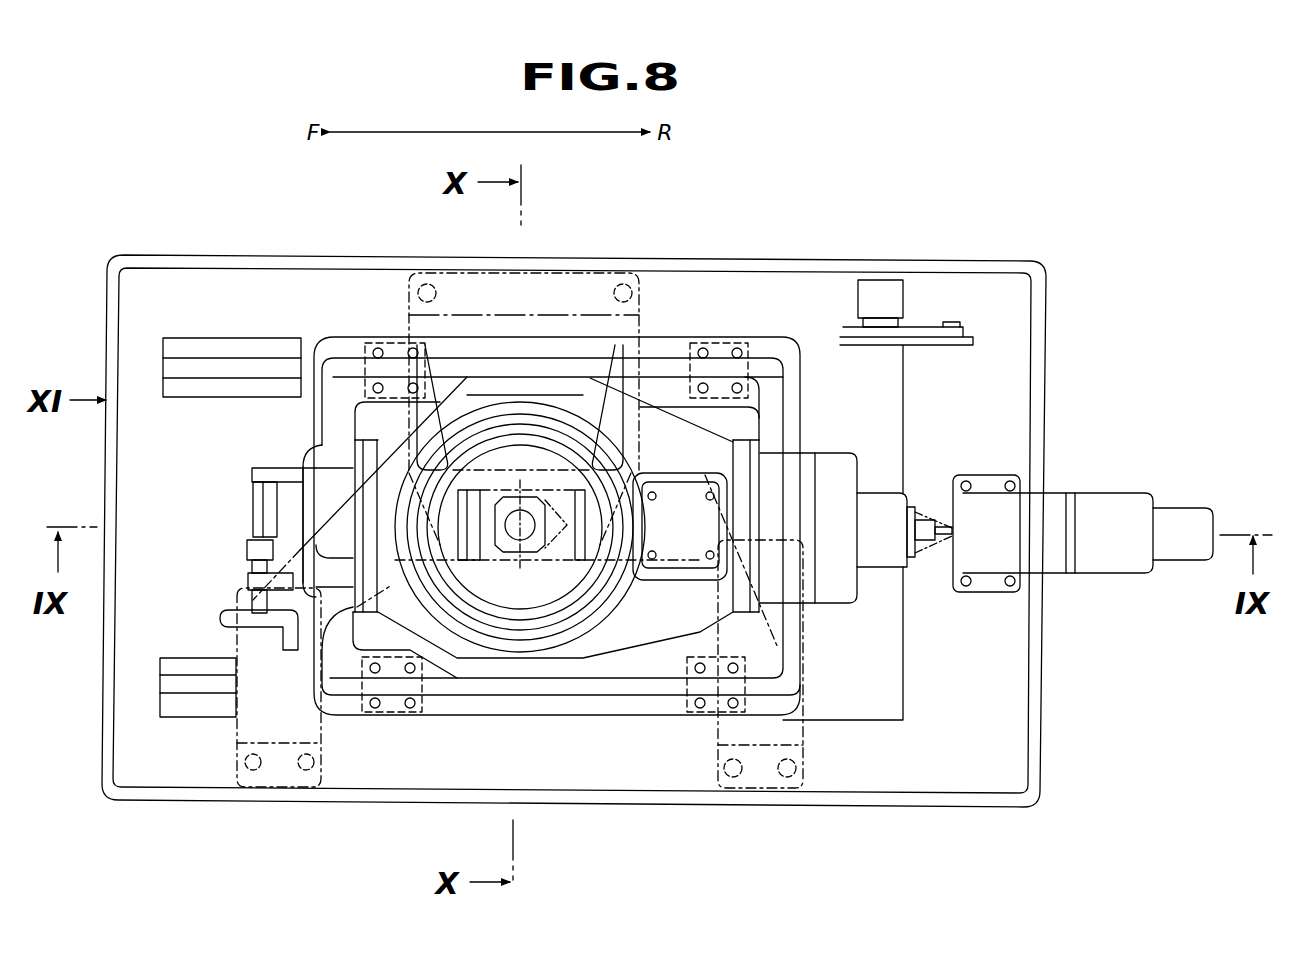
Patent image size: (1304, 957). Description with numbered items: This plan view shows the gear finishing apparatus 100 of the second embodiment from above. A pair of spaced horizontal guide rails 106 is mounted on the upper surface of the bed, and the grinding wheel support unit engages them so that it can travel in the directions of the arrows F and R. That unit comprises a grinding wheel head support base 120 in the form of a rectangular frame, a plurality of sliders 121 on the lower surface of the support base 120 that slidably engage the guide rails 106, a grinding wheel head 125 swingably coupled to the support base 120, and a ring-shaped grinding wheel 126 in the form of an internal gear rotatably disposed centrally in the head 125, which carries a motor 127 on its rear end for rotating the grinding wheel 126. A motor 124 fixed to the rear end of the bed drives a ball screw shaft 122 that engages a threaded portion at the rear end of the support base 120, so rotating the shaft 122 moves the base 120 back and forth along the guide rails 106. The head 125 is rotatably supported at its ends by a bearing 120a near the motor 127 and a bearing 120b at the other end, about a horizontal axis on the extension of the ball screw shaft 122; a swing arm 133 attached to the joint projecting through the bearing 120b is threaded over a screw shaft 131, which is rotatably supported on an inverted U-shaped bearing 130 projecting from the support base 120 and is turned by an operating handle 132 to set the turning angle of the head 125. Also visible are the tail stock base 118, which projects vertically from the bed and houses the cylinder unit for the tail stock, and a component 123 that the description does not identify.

The gear finishing apparatus 100 is at (978, 245).
The guide rails 106 is at (246, 370).
The tail stock base 118 is at (808, 683).
The grinding wheel head support base 120 is at (790, 407).
The bearing 120a is at (792, 577).
The bearing 120b is at (330, 488).
The sliders 121 is at (388, 340).
The ball screw shaft 122 is at (925, 525).
The gear box 123 is at (878, 510).
The motor 124 is at (1115, 505).
The grinding wheel head 125 is at (653, 425).
The grinding wheel 126 is at (505, 608).
The motor 127 is at (717, 470).
The inverted U-shaped bearing 130 is at (257, 478).
The screw shaft 131 is at (258, 505).
The operating handle 132 is at (266, 622).
The swing arm 133 is at (257, 548).